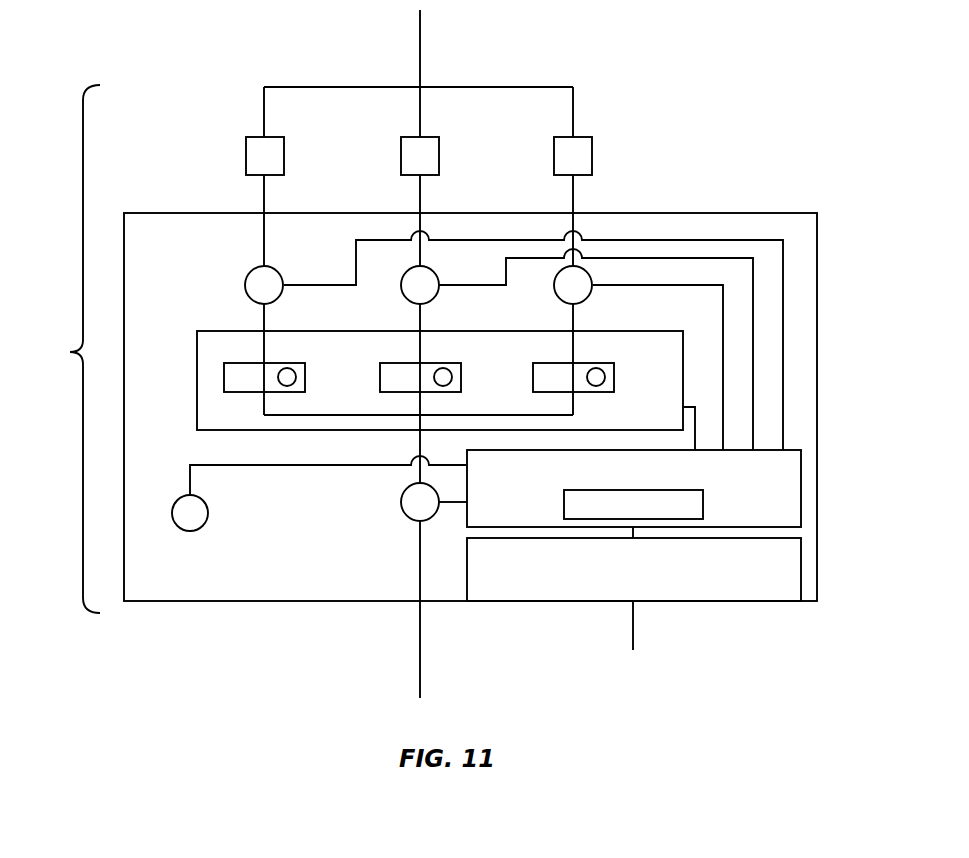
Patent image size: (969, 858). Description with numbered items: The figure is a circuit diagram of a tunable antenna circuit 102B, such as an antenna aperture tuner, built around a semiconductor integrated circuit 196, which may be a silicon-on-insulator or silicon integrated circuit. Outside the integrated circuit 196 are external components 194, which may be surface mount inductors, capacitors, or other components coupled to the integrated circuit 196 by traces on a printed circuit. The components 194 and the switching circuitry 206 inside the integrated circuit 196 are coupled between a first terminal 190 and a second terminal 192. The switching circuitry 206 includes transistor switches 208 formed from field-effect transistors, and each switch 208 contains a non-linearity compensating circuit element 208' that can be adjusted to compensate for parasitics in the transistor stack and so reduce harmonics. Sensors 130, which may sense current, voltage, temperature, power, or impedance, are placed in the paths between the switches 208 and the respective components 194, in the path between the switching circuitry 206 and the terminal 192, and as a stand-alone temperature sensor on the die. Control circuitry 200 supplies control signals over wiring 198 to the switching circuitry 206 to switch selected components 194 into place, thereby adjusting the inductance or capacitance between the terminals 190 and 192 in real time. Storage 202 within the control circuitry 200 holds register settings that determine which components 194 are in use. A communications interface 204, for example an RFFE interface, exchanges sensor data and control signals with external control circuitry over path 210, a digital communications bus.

The tunable antenna circuit 102B is at (62, 349).
The terminal 190 is at (420, 47).
The terminal 192 is at (420, 658).
The components 194 is at (284, 146).
The integrated circuit 196 is at (817, 266).
The signal wiring 198 is at (748, 229).
The sensors 130 is at (278, 298).
The switching circuitry 206 is at (197, 382).
The transistor switches 208 is at (450, 371).
The non-linearity compensating circuit element 208' is at (475, 382).
The control circuitry 200 is at (801, 487).
The storage 202 is at (703, 506).
The communications interface 204 is at (801, 571).
The path 210 is at (633, 633).